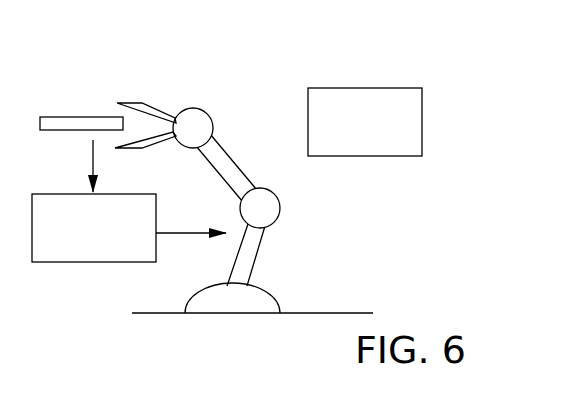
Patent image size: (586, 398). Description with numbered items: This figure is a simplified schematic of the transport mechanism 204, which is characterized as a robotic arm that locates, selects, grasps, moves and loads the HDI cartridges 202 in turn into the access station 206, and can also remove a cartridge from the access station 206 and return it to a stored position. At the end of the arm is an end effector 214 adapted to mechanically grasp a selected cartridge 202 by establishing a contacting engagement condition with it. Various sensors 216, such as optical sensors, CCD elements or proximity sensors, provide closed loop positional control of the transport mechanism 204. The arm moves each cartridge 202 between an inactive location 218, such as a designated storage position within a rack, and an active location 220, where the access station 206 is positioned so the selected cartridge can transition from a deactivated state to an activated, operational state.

The HDI cartridge 202 is at (80, 115).
The transport mechanism 204 is at (198, 182).
The access station 206 is at (422, 118).
The end effector 214 is at (192, 107).
The sensors 216 is at (93, 263).
The inactive location 218 is at (91, 20).
The active location 220 is at (308, 32).